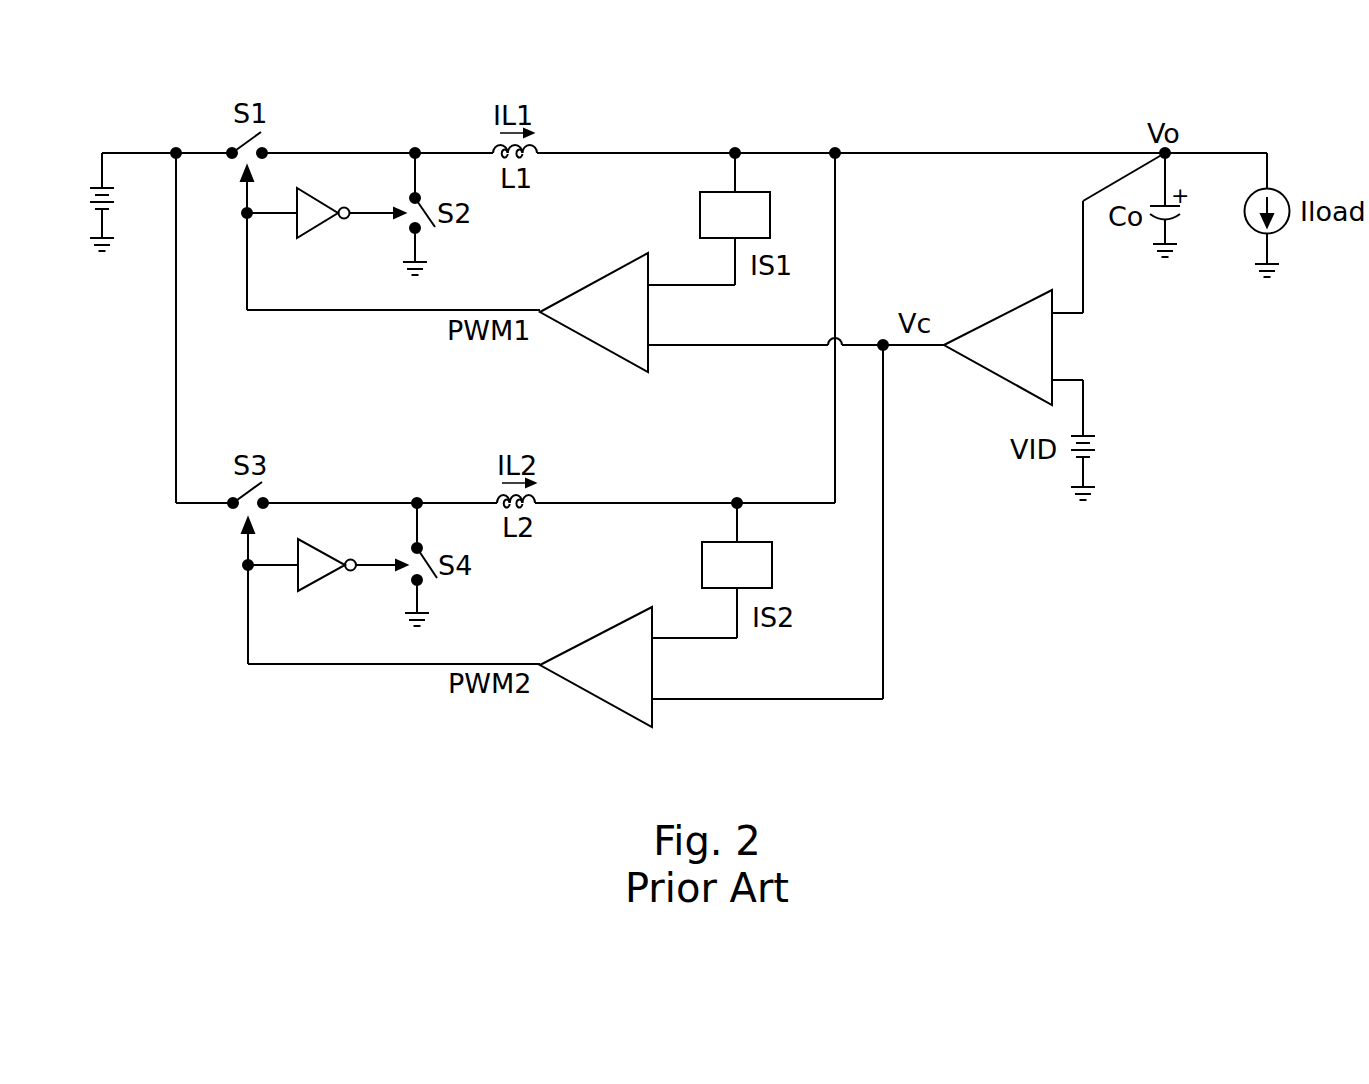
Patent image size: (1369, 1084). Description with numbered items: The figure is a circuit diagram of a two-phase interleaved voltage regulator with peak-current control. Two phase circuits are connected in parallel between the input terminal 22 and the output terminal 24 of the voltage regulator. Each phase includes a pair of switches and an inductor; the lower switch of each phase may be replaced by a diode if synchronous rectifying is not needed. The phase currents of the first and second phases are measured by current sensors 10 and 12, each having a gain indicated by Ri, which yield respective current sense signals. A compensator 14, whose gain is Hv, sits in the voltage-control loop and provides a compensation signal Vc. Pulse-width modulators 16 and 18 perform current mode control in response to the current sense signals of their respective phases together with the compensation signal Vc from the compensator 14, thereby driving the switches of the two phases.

The input terminal 22 is at (130, 152).
The output terminal 24 is at (882, 157).
The current sensor 10 is at (700, 212).
The current sensor 12 is at (702, 562).
The compensator 14 is at (996, 315).
The pulse-width modulator 16 is at (593, 282).
The pulse-width modulator 18 is at (596, 635).